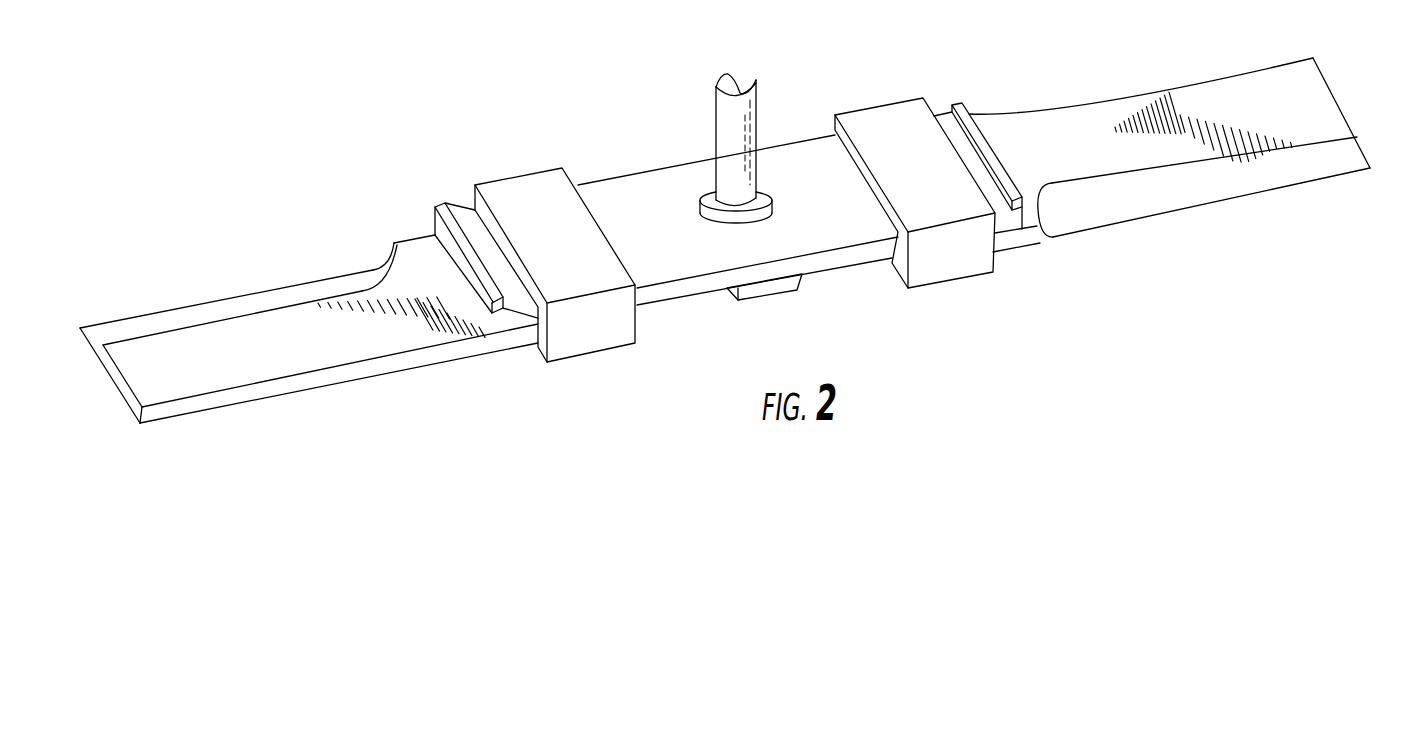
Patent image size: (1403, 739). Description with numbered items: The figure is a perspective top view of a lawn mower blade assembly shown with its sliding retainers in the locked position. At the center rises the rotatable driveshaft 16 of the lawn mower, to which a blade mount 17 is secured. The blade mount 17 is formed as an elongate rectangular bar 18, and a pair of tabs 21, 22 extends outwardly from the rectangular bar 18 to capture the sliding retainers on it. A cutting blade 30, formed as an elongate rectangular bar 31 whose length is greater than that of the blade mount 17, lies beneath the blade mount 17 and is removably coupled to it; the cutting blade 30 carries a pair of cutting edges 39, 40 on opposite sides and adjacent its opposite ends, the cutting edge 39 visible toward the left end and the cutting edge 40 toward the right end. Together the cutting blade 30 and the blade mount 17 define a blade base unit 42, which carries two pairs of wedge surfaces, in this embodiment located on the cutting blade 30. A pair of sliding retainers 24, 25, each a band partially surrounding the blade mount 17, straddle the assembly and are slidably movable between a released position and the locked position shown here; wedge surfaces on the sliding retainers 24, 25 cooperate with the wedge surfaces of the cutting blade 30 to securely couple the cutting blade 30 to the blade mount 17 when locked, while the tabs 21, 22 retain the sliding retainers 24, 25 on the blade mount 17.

The rotatable driveshaft 16 is at (715, 107).
The blade mount 17 is at (639, 171).
The elongate rectangular bar 18 is at (463, 228).
The tab 21 is at (440, 205).
The tab 22 is at (958, 103).
The sliding retainer 24 is at (540, 170).
The sliding retainer 25 is at (882, 103).
The cutting blade 30 is at (309, 329).
The elongate rectangular bar 31 is at (247, 362).
The cutting edge 39 is at (268, 292).
The cutting edge 40 is at (1143, 222).
The blade base unit 42 is at (406, 221).